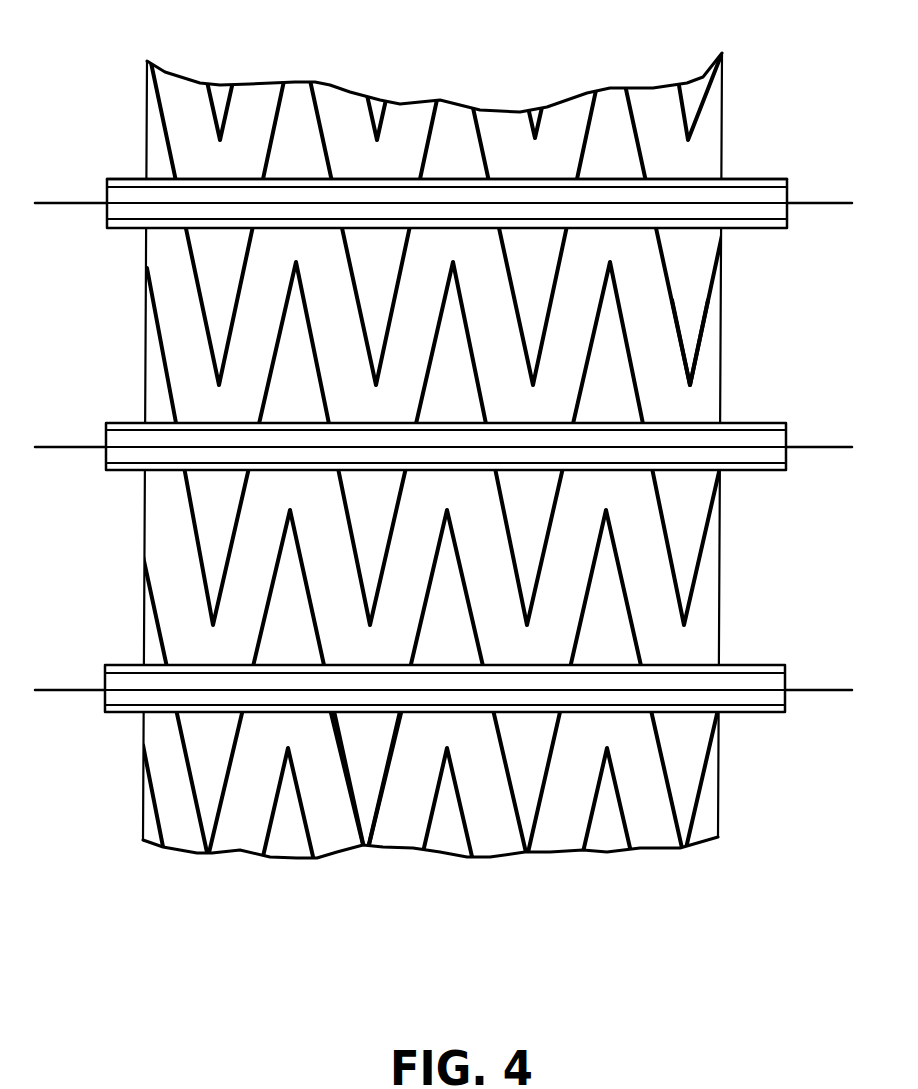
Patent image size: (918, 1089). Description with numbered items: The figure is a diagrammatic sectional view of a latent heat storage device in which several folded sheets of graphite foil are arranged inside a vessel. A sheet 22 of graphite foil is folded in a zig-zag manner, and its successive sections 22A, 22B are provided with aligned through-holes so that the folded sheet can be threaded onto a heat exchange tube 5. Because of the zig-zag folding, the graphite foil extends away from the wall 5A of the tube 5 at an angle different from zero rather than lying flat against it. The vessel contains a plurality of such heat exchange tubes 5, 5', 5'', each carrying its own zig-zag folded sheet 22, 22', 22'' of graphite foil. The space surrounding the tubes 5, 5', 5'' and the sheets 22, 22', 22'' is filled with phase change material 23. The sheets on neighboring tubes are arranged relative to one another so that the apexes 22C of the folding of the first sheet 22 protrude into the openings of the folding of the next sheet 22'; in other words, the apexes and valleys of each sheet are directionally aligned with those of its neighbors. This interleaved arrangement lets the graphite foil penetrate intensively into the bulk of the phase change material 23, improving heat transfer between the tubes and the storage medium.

The heat exchange tube 5 is at (443, 186).
The wall of tube 5A is at (745, 178).
The heat exchange tube 5' is at (443, 430).
The heat exchange tube 5'' is at (445, 672).
The sheet of graphite foil 22 is at (462, 202).
The sheet of graphite foil 22' is at (468, 443).
The sheet of graphite foil 22'' is at (464, 705).
The section of zig-zag folded sheet 22A is at (348, 775).
The section of zig-zag folded sheet 22B is at (392, 777).
The apex of folding 22C is at (693, 378).
The phase change material 23 is at (707, 137).